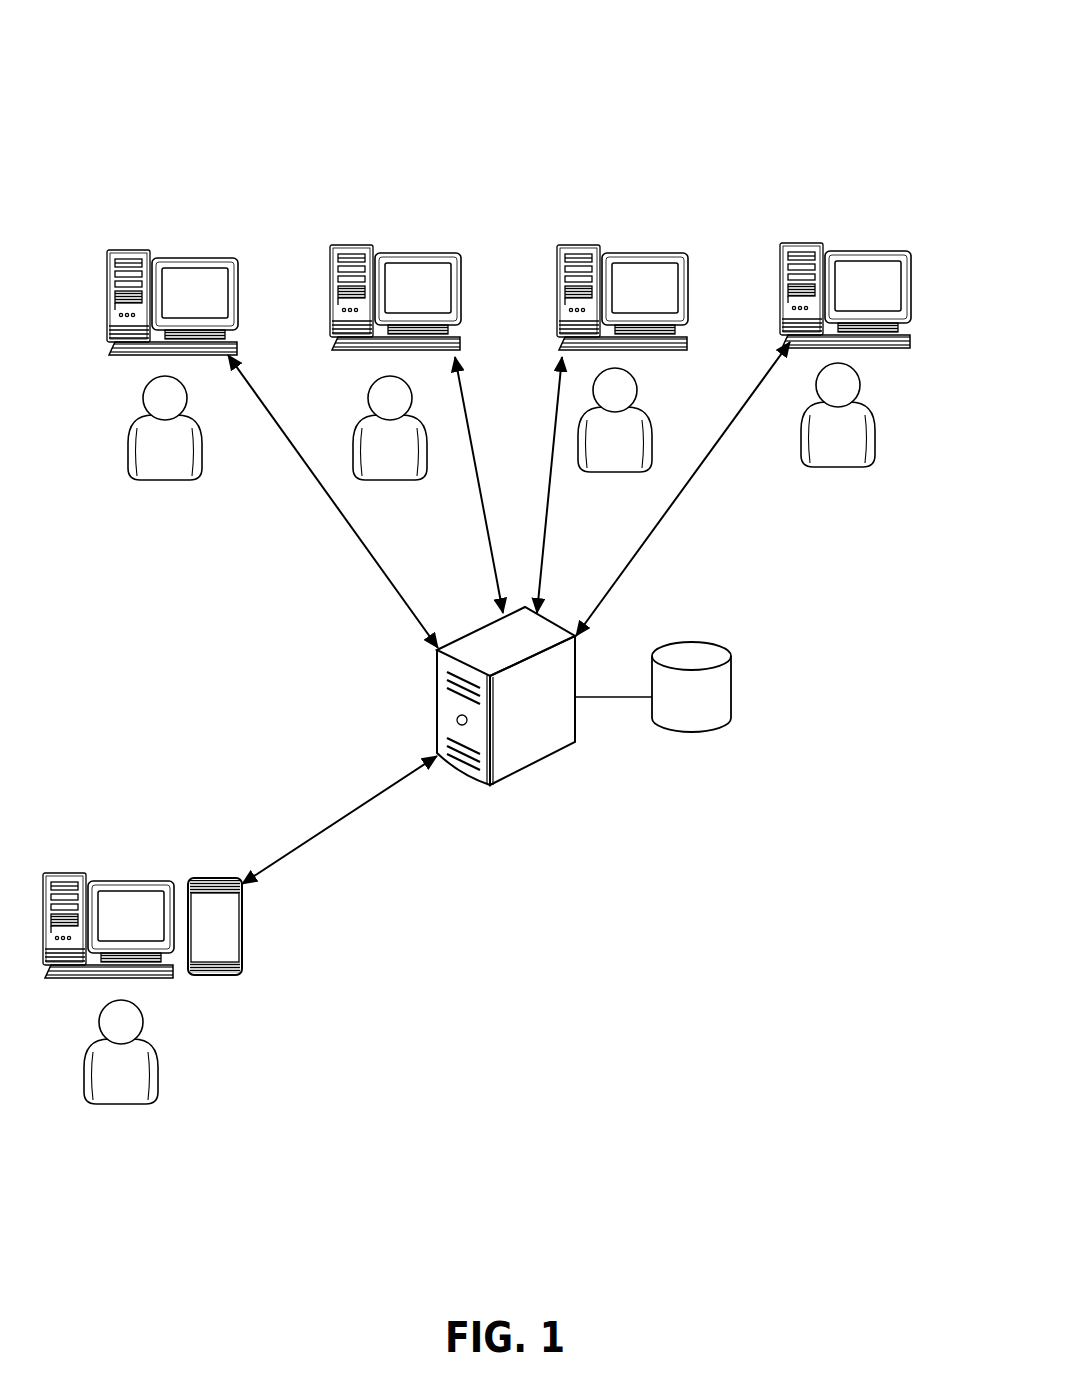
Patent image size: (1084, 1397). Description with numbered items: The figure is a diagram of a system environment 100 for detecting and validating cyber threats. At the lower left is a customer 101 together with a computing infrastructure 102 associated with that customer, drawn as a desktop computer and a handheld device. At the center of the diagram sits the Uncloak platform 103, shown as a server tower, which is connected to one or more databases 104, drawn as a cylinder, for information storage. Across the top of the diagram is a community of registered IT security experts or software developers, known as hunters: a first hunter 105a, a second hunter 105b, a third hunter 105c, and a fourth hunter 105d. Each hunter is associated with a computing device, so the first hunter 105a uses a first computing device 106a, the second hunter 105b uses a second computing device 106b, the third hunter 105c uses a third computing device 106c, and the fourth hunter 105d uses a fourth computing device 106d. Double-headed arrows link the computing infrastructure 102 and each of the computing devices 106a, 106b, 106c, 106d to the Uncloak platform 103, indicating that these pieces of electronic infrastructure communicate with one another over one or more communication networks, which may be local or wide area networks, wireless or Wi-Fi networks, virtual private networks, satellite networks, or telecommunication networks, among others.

The system environment 100 is at (692, 70).
The customer 101 is at (137, 1077).
The computing infrastructure 102 is at (130, 882).
The Uncloak platform 103 is at (513, 768).
The database 104 is at (722, 708).
The first hunter 105a is at (182, 455).
The second hunter 105b is at (405, 452).
The third hunter 105c is at (580, 445).
The fourth hunter 105d is at (853, 440).
The first computing device 106a is at (195, 258).
The second computing device 106b is at (418, 250).
The third computing device 106c is at (645, 250).
The fourth computing device 106d is at (868, 248).